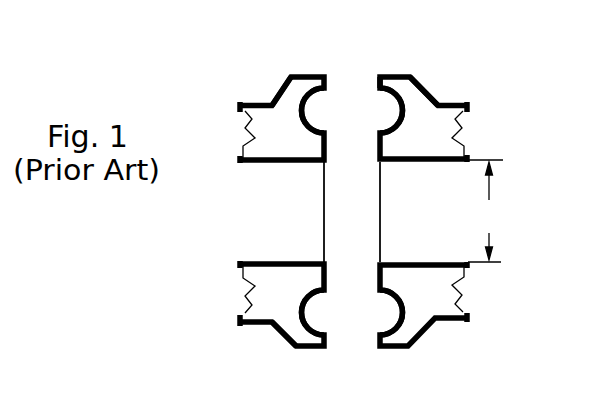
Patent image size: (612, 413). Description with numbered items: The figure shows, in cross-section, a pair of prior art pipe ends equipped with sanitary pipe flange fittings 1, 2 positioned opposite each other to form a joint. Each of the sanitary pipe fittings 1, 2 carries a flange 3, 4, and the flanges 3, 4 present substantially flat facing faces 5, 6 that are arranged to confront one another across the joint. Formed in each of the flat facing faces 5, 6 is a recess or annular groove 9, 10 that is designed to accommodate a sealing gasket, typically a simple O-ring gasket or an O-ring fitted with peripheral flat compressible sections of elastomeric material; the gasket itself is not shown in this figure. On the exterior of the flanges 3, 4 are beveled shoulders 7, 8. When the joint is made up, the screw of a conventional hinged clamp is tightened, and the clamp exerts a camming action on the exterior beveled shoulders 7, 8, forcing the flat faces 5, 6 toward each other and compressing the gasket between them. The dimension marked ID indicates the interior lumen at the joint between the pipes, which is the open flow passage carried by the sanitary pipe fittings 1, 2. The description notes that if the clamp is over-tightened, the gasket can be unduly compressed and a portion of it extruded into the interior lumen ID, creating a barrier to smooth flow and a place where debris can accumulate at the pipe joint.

The sanitary pipe flange fitting 1 is at (252, 223).
The sanitary pipe flange fitting 2 is at (430, 229).
The flange 3 is at (284, 137).
The flange 4 is at (418, 298).
The flat facing face 5 is at (325, 183).
The flat facing face 6 is at (376, 82).
The exterior beveled shoulder 7 is at (283, 90).
The exterior beveled shoulder 8 is at (428, 88).
The annular groove 9 is at (303, 312).
The annular groove 10 is at (403, 122).
The interior lumen ID is at (485, 211).